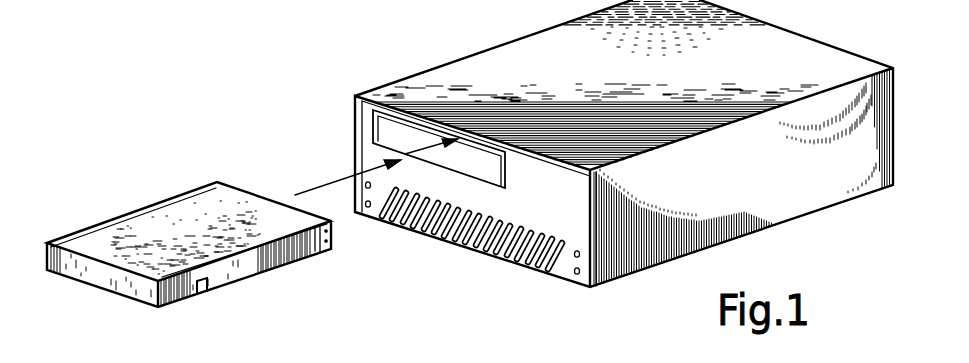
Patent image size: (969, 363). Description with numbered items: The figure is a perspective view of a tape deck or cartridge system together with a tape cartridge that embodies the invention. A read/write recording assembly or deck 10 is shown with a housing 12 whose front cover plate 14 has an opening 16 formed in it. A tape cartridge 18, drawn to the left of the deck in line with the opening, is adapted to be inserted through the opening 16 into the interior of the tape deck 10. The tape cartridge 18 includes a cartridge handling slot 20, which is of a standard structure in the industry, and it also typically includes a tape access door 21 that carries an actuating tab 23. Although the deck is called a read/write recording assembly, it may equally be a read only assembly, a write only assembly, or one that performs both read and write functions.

The read/write recording assembly or deck 10 is at (375, 46).
The housing 12 is at (657, 81).
The front cover plate 14 is at (562, 226).
The opening 16 is at (481, 157).
The tape cartridge 18 is at (245, 236).
The cartridge handling slot 20 is at (206, 298).
The tape access door 21 is at (318, 240).
The actuating tab 23 is at (334, 228).